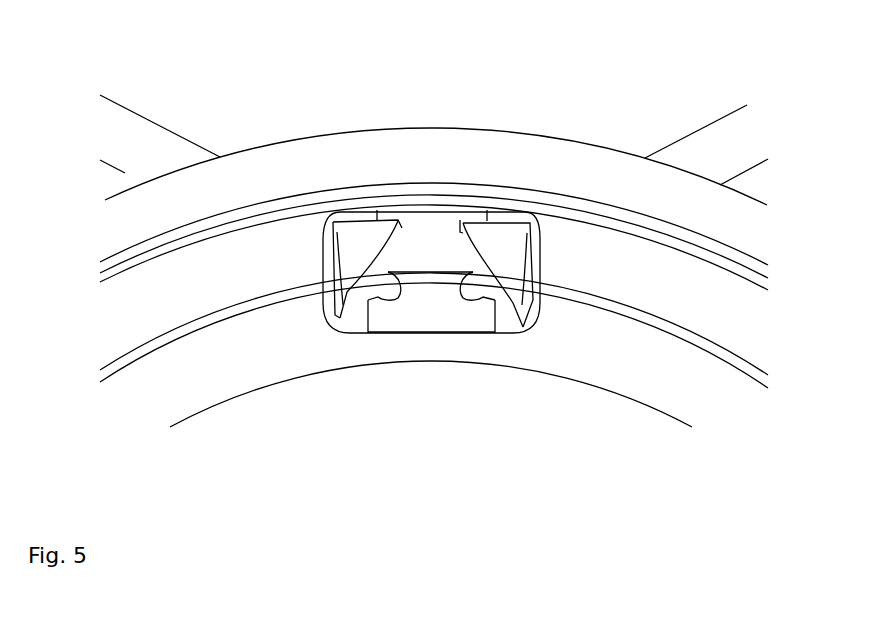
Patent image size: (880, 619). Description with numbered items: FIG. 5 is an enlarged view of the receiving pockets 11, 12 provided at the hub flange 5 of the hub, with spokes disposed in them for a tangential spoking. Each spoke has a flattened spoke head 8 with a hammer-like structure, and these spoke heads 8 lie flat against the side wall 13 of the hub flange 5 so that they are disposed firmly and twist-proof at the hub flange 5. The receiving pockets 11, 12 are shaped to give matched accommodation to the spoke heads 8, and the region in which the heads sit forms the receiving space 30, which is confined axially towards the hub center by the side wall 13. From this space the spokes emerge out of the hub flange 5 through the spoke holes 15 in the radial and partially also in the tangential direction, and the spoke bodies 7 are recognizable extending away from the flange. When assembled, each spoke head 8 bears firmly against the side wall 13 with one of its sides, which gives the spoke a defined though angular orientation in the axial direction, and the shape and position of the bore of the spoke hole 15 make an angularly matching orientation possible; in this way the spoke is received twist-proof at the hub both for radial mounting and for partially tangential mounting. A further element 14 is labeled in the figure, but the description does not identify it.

The hub flange 5 is at (477, 143).
The spoke body 7 is at (120, 128).
The spoke head 8 is at (357, 262).
The receiving pocket 11 is at (407, 240).
The receiving pocket 12 is at (488, 227).
The side wall 13 is at (407, 330).
The ring surface 14 is at (290, 250).
The spoke hole 15 is at (562, 232).
The receiving space 30 is at (433, 287).